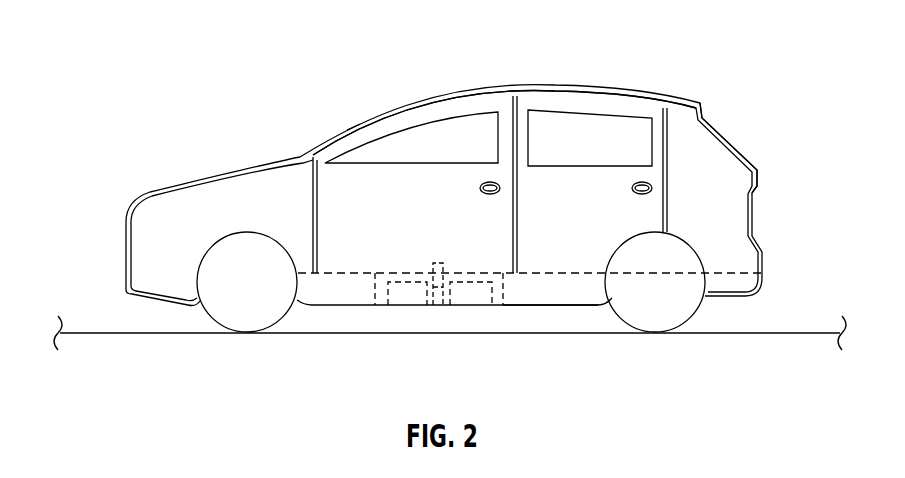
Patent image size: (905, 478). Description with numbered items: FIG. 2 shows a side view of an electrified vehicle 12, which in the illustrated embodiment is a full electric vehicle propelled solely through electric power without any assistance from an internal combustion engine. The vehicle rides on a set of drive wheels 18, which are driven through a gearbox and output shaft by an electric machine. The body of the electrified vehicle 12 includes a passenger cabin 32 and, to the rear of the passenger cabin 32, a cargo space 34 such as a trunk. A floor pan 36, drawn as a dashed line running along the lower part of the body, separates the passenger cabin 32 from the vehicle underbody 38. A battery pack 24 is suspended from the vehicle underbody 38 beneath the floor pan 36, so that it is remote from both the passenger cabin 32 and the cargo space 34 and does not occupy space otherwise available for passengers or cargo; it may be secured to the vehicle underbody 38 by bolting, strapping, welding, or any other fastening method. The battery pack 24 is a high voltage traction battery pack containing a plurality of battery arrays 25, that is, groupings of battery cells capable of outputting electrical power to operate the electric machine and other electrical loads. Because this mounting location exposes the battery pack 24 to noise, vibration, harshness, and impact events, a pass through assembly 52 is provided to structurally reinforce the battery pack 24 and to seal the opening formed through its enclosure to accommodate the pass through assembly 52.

The electrified vehicle 12 is at (281, 78).
The drive wheels 18 is at (245, 320).
The battery pack 24 is at (481, 291).
The battery arrays 25 is at (407, 305).
The passenger cabin 32 is at (455, 138).
The cargo space 34 is at (721, 160).
The floor pan 36 is at (549, 273).
The vehicle underbody 38 is at (560, 288).
The pass through assembly 52 is at (430, 268).